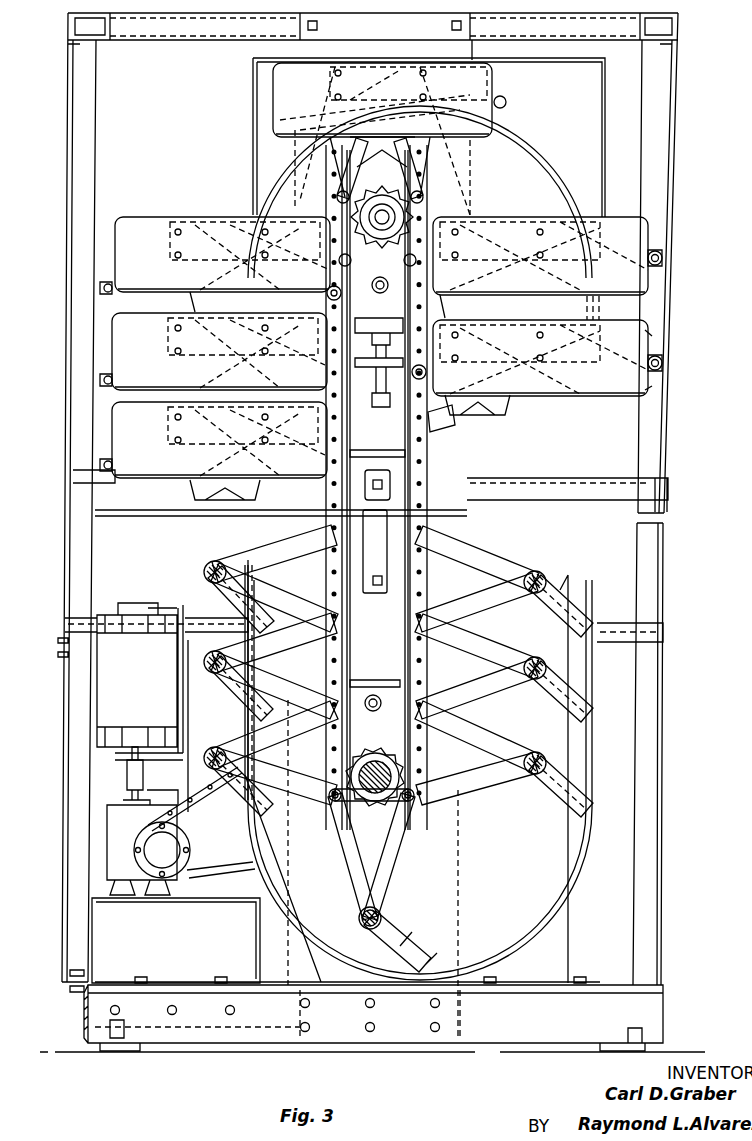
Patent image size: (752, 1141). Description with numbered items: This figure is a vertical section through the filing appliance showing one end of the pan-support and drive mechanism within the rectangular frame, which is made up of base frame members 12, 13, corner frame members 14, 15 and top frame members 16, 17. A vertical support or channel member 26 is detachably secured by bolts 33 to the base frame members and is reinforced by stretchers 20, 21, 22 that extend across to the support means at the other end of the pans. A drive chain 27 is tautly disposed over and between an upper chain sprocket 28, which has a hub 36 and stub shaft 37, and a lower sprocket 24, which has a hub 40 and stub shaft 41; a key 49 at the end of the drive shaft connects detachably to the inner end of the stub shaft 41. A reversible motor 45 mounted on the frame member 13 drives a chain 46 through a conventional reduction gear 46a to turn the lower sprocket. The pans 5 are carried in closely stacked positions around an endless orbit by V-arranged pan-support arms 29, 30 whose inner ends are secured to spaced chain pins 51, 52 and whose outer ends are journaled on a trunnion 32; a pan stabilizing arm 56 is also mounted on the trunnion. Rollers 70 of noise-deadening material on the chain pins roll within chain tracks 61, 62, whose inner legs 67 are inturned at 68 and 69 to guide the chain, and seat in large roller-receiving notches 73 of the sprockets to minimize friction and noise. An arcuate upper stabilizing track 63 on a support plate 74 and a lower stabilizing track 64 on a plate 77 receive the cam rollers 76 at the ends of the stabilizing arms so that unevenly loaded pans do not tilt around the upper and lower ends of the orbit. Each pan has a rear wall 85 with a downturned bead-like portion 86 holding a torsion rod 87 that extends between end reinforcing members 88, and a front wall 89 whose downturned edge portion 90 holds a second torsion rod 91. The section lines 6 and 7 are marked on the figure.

The pan 5 is at (137, 218).
The section line 6 is at (295, 650).
The section line 7 is at (212, 372).
The base frame member 12 is at (492, 1043).
The base frame member 13 is at (88, 1012).
The corner frame member 14 is at (64, 738).
The corner frame member 15 is at (662, 727).
The top frame member 16 is at (175, 28).
The top frame member 17 is at (68, 30).
The stretcher 20 is at (320, 17).
The stretcher 21 is at (382, 470).
The stretcher 22 is at (385, 578).
The lower chain sprocket 24 is at (330, 800).
The vertical support member 26 is at (478, 47).
The drive chain 27 is at (428, 427).
The upper chain sprocket 28 is at (412, 212).
The pan-support arm 29 is at (265, 548).
The pan-support arm 30 is at (463, 560).
The trunnion 32 is at (205, 570).
The bolt 33 is at (310, 1027).
The hub 36 is at (398, 222).
The stub shaft 37 is at (370, 218).
The hub 40 is at (385, 810).
The stub shaft 41 is at (366, 790).
The reversible motor 45 is at (120, 672).
The chain 46 is at (222, 870).
The reduction gear 46a is at (120, 845).
The key 49 is at (392, 775).
The chain pin 51 is at (430, 372).
The chain pin 52 is at (330, 290).
The pan stabilizing arm 56 is at (553, 592).
The chain track 61 is at (352, 428).
The chain track 62 is at (440, 420).
The upper stabilizing track 63 is at (537, 152).
The lower stabilizing track 64 is at (538, 925).
The inner leg 67 is at (405, 660).
The inturned portion 68 is at (375, 711).
The inturned portion 69 is at (372, 289).
The roller 70 is at (343, 190).
The roller-receiving notch 73 is at (350, 197).
The support plate 74 is at (597, 145).
The cam roller 76 is at (424, 962).
The plate 77 is at (573, 888).
The rear wall 85 is at (650, 372).
The downturned bead-like portion 86 is at (662, 256).
The torsion rod 87 is at (662, 268).
The end reinforcing member 88 is at (660, 250).
The front wall 89 is at (110, 288).
The downturned edge portion 90 is at (100, 288).
The torsion rod 91 is at (103, 290).